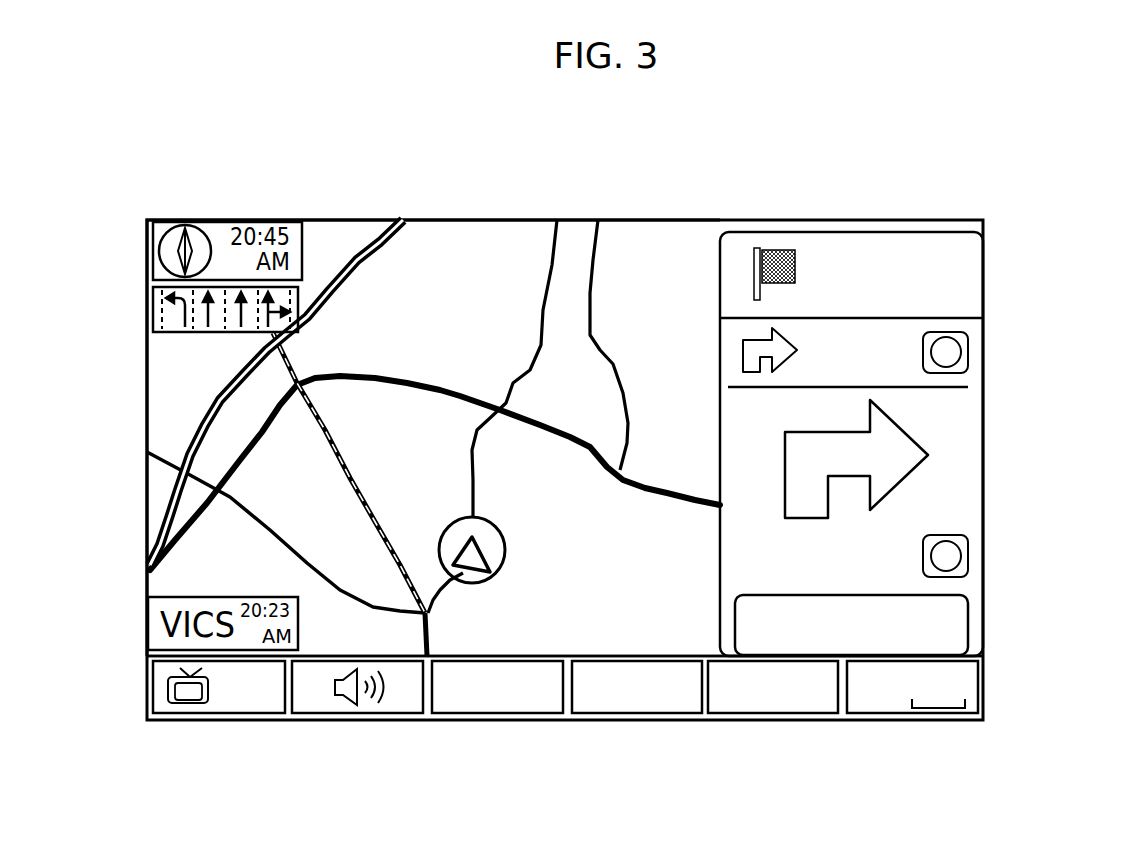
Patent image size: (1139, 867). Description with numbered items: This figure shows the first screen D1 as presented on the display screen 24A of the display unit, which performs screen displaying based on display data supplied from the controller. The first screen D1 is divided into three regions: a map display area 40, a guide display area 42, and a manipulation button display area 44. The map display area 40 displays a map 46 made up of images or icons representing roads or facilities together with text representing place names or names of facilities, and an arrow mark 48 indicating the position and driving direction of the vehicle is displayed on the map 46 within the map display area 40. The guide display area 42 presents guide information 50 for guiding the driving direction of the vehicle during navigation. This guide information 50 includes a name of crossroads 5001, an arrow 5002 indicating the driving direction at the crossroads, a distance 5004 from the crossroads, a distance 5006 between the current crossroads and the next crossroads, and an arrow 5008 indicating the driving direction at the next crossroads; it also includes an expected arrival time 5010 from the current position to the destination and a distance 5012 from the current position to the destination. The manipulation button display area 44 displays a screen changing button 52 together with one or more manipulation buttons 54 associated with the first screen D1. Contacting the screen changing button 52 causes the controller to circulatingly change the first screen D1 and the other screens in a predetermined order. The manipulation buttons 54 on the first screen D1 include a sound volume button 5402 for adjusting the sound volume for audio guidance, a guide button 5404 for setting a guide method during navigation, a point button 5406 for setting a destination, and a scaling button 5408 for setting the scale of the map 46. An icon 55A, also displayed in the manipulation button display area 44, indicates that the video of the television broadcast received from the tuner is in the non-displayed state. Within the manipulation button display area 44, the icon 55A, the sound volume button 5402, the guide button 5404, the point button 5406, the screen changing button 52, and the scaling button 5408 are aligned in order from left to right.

The first screen D1 is at (642, 134).
The display screen 24A is at (340, 220).
The map display area 40 is at (672, 263).
The map 46 is at (463, 263).
The arrow mark 48 is at (503, 548).
The guide information 50 is at (996, 229).
The expected arrival time 5010 is at (958, 250).
The distance from the current position to the destination 5012 is at (938, 292).
The arrow indicating the driving direction at the next crossroads 5008 is at (743, 337).
The distance between the current crossroads to the next crossroads 5006 is at (890, 340).
The guide display area 42 is at (962, 413).
The arrow indicating the driving direction at the crossroads 5002 is at (910, 480).
The distance from the crossroads 5004 is at (892, 537).
The name of crossroads 5001 is at (962, 605).
The manipulation button display area 44 is at (630, 727).
The manipulation buttons 54 is at (633, 730).
The icon 55A is at (218, 705).
The sound volume button 5402 is at (328, 705).
The guide button 5404 is at (468, 705).
The point button 5406 is at (605, 705).
The screen changing button 52 is at (720, 705).
The scaling button 5408 is at (880, 705).